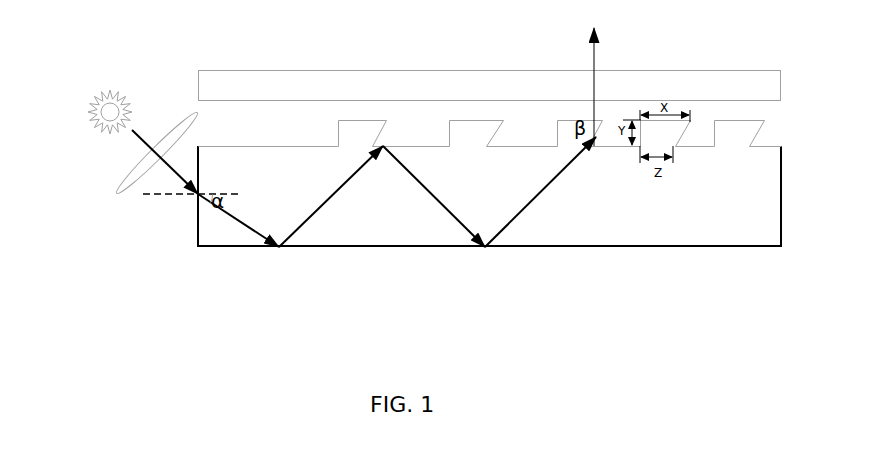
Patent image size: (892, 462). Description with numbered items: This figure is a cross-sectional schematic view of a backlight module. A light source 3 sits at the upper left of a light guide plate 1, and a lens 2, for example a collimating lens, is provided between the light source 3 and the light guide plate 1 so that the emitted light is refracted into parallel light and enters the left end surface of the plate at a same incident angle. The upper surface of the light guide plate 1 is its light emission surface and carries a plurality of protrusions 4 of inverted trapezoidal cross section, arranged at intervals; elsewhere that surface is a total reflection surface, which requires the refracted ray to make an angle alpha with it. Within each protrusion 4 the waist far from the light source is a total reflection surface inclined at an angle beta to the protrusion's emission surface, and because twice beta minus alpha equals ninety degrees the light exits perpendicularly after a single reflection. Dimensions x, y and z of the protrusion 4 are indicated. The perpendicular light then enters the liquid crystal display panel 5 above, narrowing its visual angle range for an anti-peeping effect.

The light guide plate 1 is at (268, 156).
The lens 2 is at (181, 123).
The light source 3 is at (97, 91).
The protrusions 4 is at (348, 133).
The liquid crystal display panel 5 is at (403, 90).